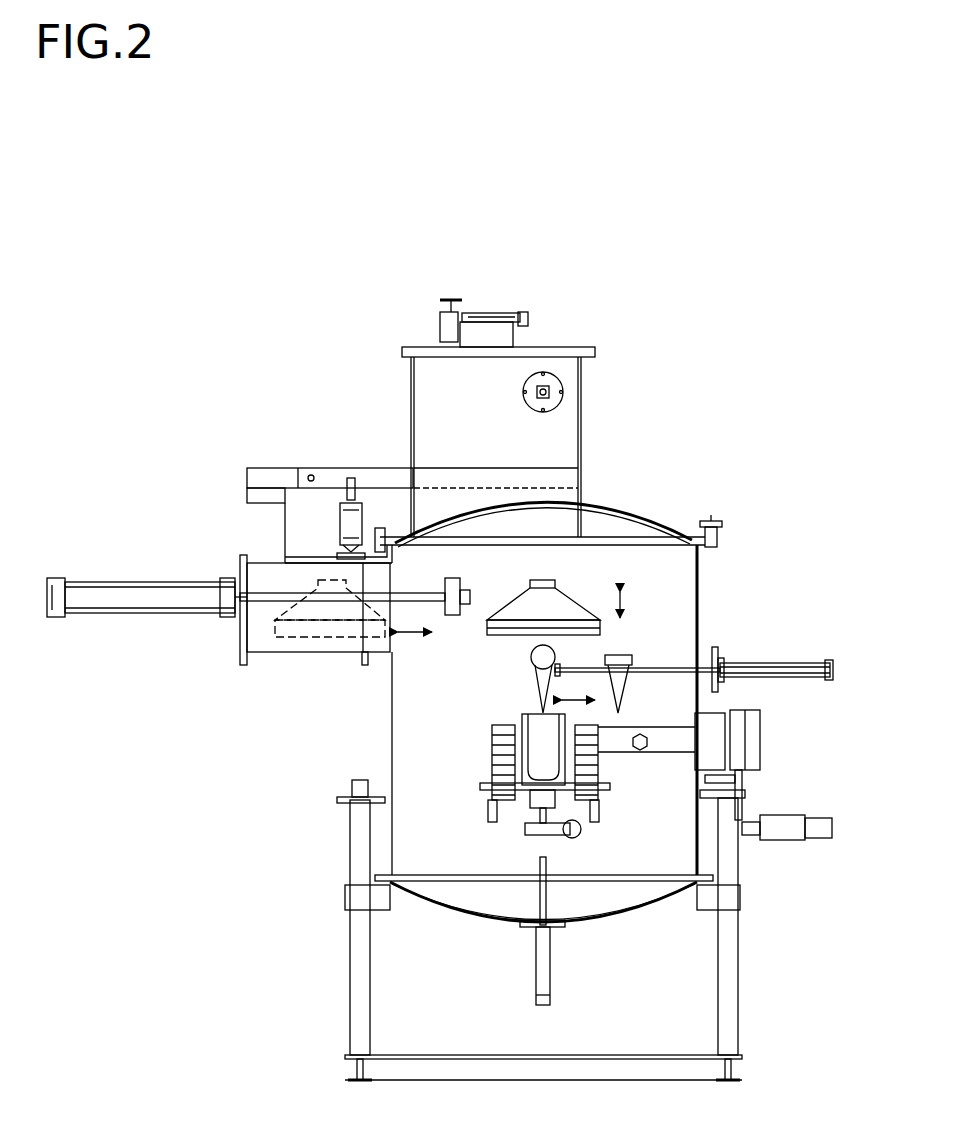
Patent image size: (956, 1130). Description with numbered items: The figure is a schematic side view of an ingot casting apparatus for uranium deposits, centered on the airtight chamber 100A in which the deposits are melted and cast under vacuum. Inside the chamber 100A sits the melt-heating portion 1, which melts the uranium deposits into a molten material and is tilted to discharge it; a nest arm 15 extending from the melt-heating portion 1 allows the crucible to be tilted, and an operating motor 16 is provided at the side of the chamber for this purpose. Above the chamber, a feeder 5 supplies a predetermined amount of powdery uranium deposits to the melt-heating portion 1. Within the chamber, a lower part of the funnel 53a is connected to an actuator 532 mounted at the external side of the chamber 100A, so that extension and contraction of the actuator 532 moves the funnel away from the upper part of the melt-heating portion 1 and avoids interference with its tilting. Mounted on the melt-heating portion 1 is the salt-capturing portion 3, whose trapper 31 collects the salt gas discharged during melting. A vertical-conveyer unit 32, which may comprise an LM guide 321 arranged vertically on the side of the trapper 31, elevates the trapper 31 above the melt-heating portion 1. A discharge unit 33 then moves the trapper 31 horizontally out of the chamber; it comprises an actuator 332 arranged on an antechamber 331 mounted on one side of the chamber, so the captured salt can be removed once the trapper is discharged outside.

The melt-heating portion 1 is at (468, 808).
The salt-capturing portion 3 is at (68, 625).
The feeder 5 is at (518, 300).
The nest arm 15 is at (662, 745).
The operating motor 16 is at (770, 820).
The trapper 31 is at (549, 580).
The vertical-conveyer unit 32 is at (447, 565).
The LM guide 321 is at (446, 583).
The discharge unit 33 is at (262, 752).
The antechamber 331 is at (262, 655).
The actuator 332 is at (182, 615).
The lower part of the funnel 53a is at (552, 687).
The actuator 532 is at (762, 672).
The chamber 100A is at (640, 522).